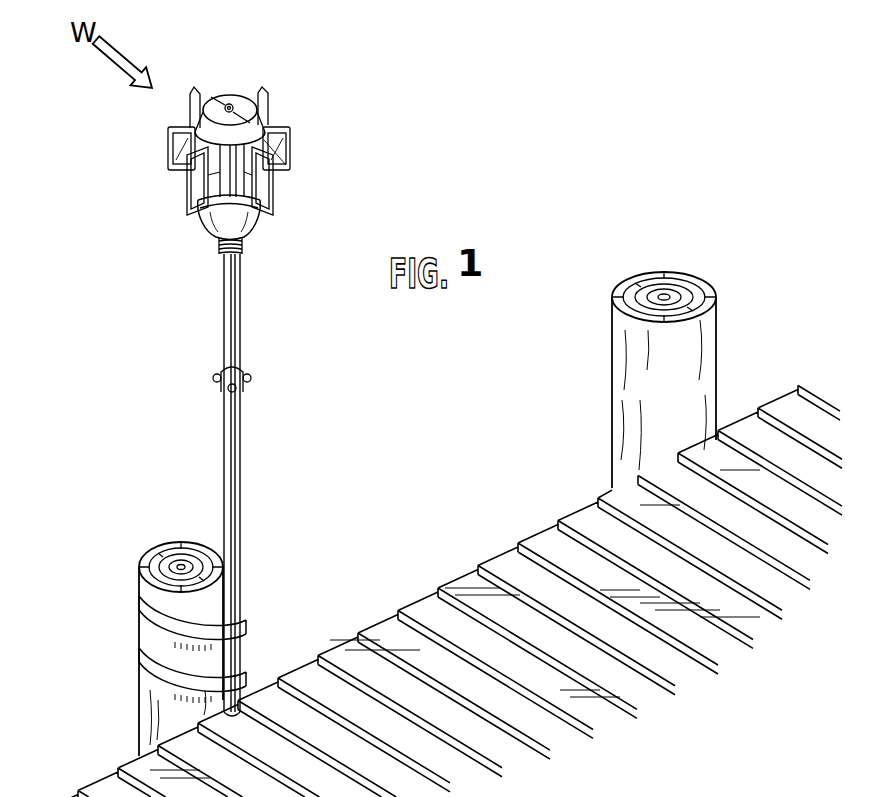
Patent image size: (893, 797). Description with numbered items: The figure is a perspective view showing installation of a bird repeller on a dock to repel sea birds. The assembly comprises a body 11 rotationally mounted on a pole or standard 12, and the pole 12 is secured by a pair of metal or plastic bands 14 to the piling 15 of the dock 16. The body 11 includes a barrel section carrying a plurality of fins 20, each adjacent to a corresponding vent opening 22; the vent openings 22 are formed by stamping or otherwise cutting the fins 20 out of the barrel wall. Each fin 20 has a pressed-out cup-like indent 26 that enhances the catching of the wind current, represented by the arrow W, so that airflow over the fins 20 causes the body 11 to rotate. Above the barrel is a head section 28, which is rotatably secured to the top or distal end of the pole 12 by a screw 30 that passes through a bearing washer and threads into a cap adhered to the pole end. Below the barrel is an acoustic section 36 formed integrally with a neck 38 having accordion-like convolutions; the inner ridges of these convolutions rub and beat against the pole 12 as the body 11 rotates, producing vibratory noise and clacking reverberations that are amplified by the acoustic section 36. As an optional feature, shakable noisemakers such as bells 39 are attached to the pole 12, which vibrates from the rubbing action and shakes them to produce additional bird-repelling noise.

The body 11 is at (241, 76).
The pole 12 is at (238, 488).
The bands 14 is at (146, 632).
The piling 15 is at (178, 546).
The dock 16 is at (496, 502).
The fins 20 is at (292, 154).
The vent opening 22 is at (241, 190).
The indent 26 is at (281, 168).
The head section 28 is at (227, 104).
The screw 30 is at (261, 96).
The acoustic section 36 is at (212, 222).
The neck 38 is at (224, 248).
The bells 39 is at (252, 365).